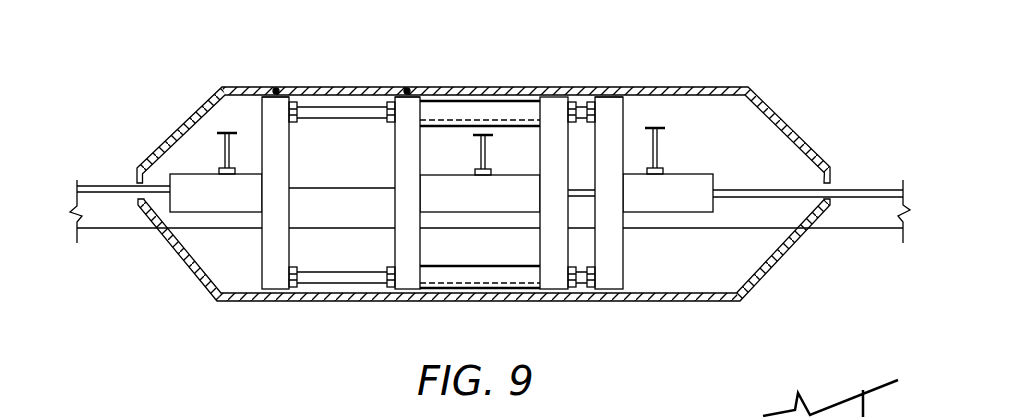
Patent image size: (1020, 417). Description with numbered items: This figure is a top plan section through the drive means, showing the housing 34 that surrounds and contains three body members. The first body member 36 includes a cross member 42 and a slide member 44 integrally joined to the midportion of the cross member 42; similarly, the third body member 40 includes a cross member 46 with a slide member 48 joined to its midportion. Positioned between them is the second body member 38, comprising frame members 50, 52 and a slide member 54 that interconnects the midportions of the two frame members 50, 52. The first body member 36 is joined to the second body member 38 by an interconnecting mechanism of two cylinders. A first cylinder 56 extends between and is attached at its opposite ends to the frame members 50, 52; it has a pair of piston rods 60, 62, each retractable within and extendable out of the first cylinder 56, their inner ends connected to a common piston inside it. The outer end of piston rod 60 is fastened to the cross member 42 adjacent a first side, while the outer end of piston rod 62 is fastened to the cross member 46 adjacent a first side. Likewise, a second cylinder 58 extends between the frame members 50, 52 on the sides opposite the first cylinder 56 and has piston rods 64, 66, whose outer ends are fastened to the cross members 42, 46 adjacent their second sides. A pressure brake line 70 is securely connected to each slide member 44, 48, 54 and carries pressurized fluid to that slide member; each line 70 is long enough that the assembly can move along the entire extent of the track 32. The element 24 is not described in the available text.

The housing shell 24 is at (698, 87).
The track 32 is at (103, 203).
The housing 34 is at (793, 135).
The first body member 36 is at (276, 90).
The second body member 38 is at (407, 90).
The third body member 40 is at (610, 95).
The cross member 42 is at (270, 260).
The slide member 44 is at (200, 197).
The cross member 46 is at (610, 273).
The slide member 48 is at (695, 202).
The frame member 50 is at (397, 287).
The frame member 52 is at (557, 285).
The slide member 54 is at (465, 202).
The first cylinder 56 is at (515, 278).
The second cylinder 58 is at (483, 108).
The piston rod 60 is at (320, 277).
The piston rod 62 is at (578, 280).
The piston rod 64 is at (347, 108).
The piston rod 66 is at (587, 110).
The pressure brake line 70 is at (220, 152).